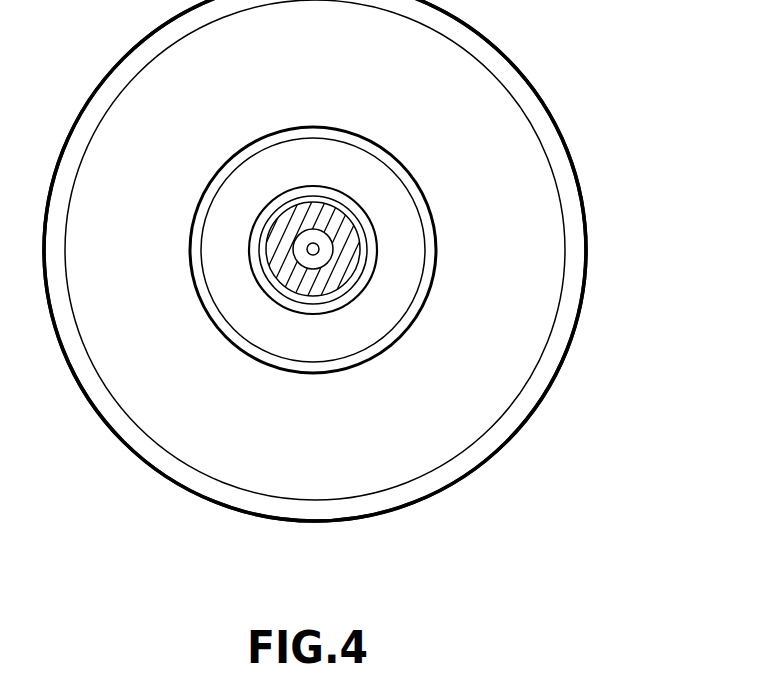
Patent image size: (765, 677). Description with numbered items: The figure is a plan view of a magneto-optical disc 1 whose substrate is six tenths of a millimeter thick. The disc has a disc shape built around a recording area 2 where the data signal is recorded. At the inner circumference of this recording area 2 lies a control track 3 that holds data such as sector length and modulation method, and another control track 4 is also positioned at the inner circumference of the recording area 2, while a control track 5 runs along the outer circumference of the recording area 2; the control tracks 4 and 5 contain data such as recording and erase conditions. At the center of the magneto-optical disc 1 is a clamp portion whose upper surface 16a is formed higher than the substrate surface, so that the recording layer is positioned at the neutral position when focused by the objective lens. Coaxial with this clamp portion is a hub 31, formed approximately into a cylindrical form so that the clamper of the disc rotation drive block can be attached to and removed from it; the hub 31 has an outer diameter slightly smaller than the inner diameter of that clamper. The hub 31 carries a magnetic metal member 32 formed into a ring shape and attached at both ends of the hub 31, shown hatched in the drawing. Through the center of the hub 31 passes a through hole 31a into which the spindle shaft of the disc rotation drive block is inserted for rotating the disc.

The magneto-optical disc 1 is at (437, 498).
The recording area 2 is at (497, 112).
The control track 3 is at (422, 198).
The control track 4 is at (437, 233).
The control track 5 is at (565, 177).
The upper surface 16a is at (373, 277).
The hub 31 is at (322, 197).
The through hole 31a is at (318, 248).
The magnetic metal member 32 is at (332, 288).